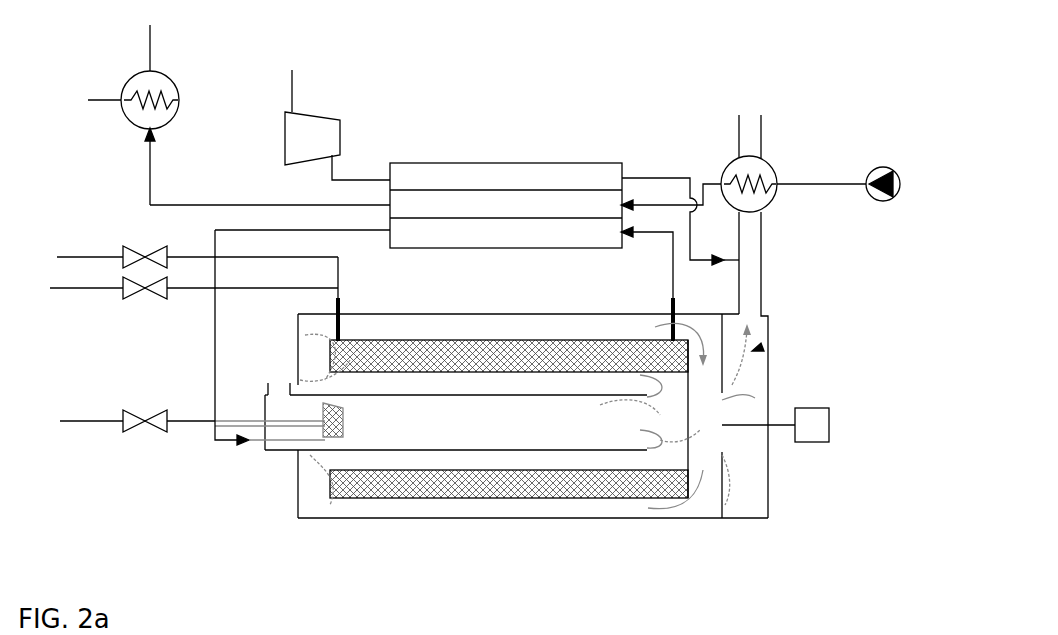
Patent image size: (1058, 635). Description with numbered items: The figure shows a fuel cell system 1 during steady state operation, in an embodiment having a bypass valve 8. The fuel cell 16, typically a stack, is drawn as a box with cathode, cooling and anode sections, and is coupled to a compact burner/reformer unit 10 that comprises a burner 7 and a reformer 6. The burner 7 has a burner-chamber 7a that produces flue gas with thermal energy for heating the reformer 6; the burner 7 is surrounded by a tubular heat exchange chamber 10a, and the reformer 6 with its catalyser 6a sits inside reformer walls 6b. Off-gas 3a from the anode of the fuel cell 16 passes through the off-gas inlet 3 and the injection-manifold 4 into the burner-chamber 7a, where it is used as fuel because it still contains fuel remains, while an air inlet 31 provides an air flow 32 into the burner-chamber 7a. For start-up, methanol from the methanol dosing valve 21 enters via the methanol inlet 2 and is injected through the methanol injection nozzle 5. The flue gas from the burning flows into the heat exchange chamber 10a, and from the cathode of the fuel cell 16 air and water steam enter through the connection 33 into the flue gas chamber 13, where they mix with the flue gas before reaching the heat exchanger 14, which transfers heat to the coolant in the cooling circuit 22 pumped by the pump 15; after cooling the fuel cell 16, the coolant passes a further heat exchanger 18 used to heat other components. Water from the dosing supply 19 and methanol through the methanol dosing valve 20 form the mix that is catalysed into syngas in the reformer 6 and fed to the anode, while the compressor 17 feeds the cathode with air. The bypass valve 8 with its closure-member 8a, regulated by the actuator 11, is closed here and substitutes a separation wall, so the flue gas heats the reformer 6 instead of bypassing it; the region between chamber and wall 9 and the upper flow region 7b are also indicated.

The fuel cell system 1 is at (590, 79).
The methanol inlet 2 is at (245, 418).
The off-gas inlet 3 is at (248, 447).
The off-gas 3a is at (392, 337).
The injection-manifold 4 is at (300, 467).
The methanol injection nozzle 5 is at (300, 512).
The reformer 6 is at (398, 514).
The catalyser 6a is at (365, 487).
The reformer walls 6b is at (513, 498).
The burner 7 is at (413, 424).
The burner-chamber 7a is at (493, 435).
The upper flow region 7b is at (553, 315).
The bypass valve 8 is at (680, 458).
The closure-member 8a is at (724, 468).
The separating wall 9 is at (724, 402).
The burner/reformer unit 10 is at (770, 546).
The heat exchange chamber 10a is at (573, 462).
The actuator 11 is at (817, 450).
The flue gas chamber 13 is at (770, 317).
The heat exchanger 14 is at (775, 204).
The pump 15 is at (900, 172).
The fuel cell 16 is at (505, 162).
The compressor 17 is at (282, 132).
The further heat exchanger 18 is at (122, 89).
The dosing supply 19 is at (143, 244).
The methanol dosing valve 20 is at (145, 300).
The methanol dosing valve 21 is at (143, 436).
The cooling circuit 22 is at (833, 184).
The air inlet 31 is at (298, 368).
The air flow 32 is at (258, 453).
The connection 33 is at (714, 262).